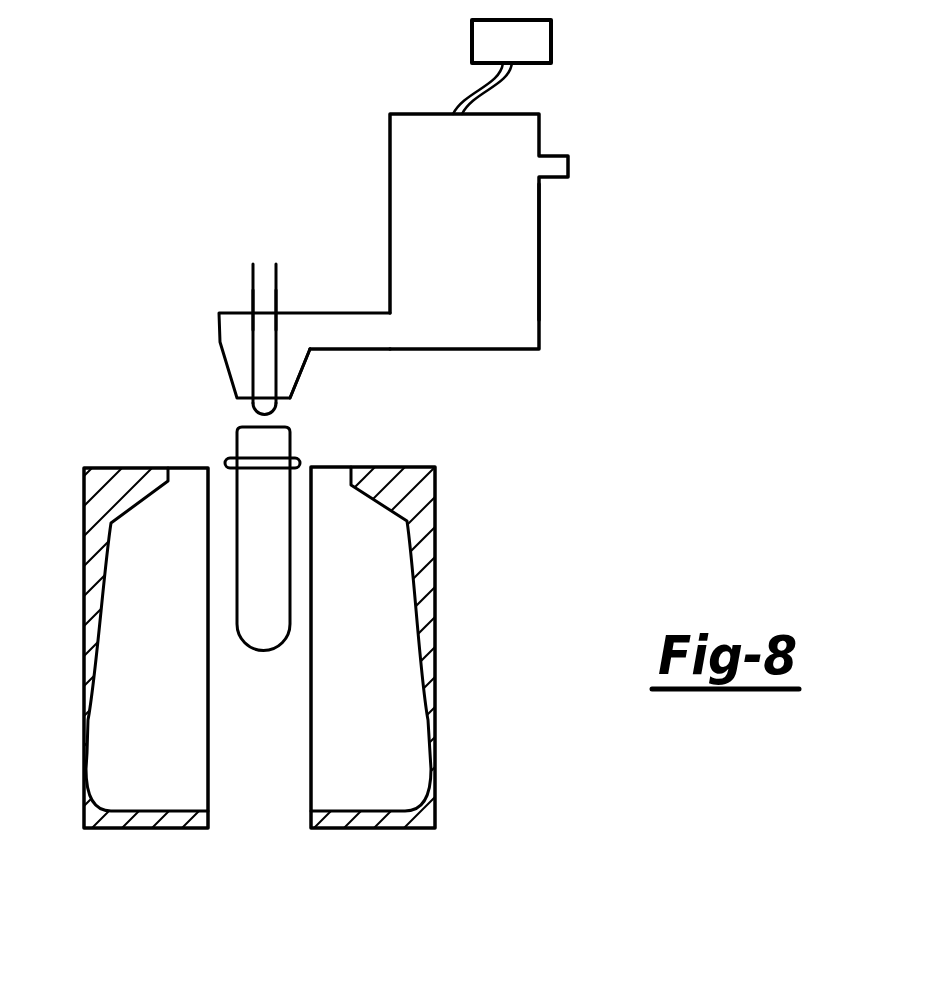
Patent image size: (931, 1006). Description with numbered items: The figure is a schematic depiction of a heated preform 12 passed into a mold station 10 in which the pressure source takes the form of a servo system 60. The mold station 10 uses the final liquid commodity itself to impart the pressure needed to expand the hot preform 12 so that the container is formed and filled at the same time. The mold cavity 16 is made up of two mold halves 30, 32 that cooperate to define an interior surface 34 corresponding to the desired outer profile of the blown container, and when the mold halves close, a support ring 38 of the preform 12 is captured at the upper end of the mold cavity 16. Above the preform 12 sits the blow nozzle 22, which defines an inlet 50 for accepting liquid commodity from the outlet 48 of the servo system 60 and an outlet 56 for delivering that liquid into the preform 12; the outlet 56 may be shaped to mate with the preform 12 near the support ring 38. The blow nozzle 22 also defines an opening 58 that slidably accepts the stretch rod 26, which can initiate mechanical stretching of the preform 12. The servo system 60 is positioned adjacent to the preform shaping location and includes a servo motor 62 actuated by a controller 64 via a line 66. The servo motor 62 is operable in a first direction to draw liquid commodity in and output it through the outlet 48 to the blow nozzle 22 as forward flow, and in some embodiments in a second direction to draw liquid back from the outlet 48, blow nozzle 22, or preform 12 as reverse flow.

The mold station 10 is at (153, 157).
The preform 12 is at (271, 473).
The mold cavity 16 is at (399, 535).
The blow nozzle 22 is at (211, 322).
The stretch rod 26 is at (243, 270).
The mold half 30 is at (76, 513).
The mold half 32 is at (429, 574).
The interior surface 34 is at (97, 613).
The support ring 38 is at (217, 456).
The outlet 48 is at (354, 341).
The inlet 50 is at (338, 302).
The outlet 56 is at (234, 403).
The opening 58 is at (243, 302).
The servo system 60 is at (382, 115).
The servo motor 62 is at (499, 251).
The controller 64 is at (543, 36).
The line 66 is at (462, 79).